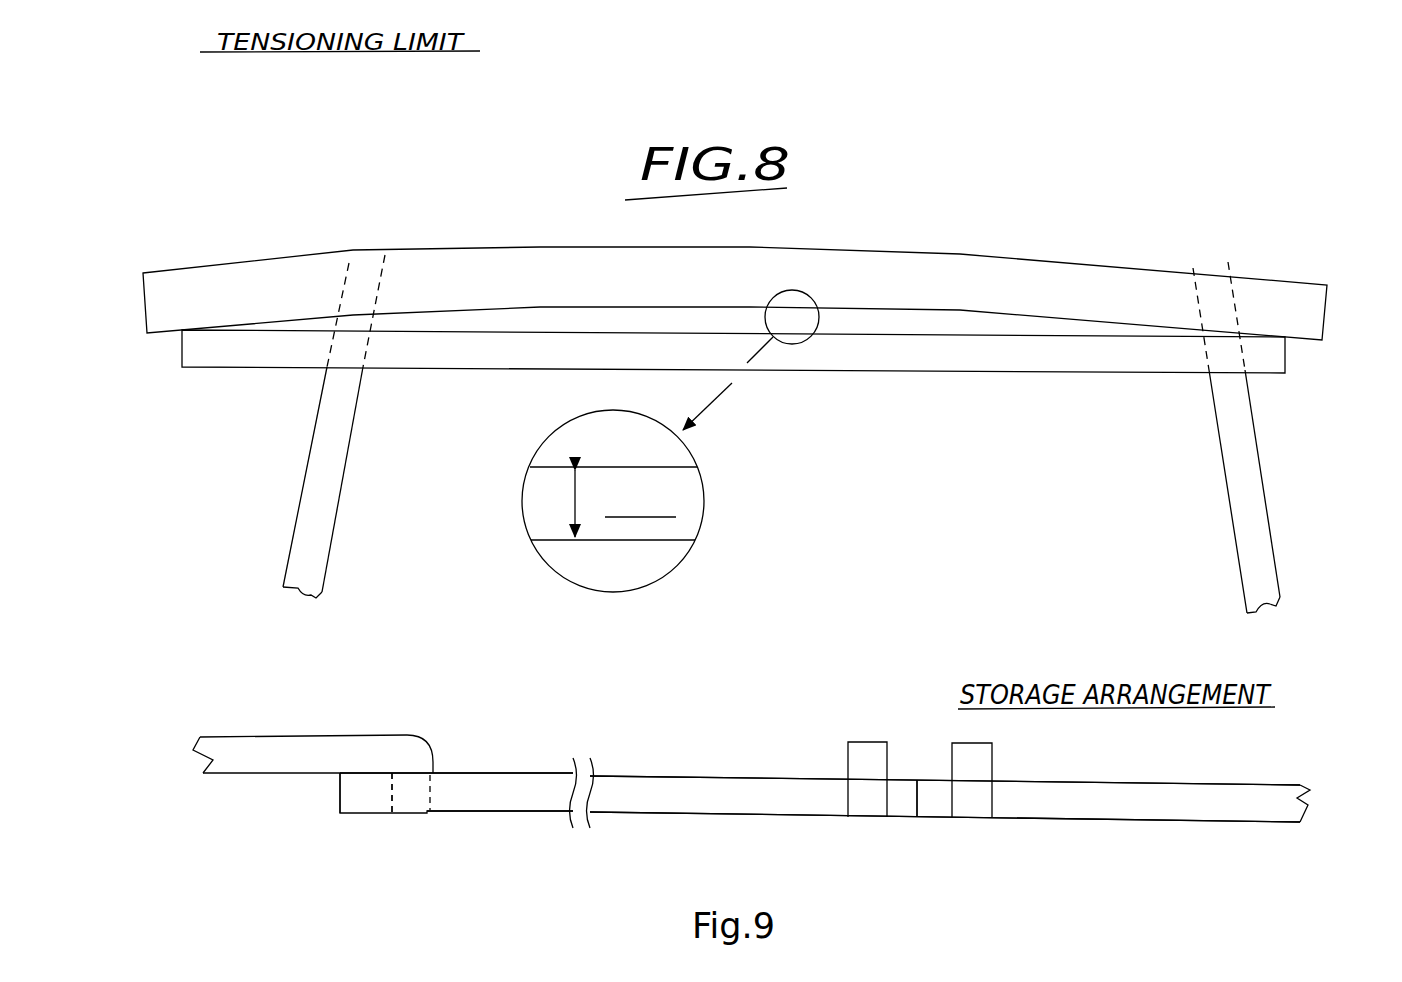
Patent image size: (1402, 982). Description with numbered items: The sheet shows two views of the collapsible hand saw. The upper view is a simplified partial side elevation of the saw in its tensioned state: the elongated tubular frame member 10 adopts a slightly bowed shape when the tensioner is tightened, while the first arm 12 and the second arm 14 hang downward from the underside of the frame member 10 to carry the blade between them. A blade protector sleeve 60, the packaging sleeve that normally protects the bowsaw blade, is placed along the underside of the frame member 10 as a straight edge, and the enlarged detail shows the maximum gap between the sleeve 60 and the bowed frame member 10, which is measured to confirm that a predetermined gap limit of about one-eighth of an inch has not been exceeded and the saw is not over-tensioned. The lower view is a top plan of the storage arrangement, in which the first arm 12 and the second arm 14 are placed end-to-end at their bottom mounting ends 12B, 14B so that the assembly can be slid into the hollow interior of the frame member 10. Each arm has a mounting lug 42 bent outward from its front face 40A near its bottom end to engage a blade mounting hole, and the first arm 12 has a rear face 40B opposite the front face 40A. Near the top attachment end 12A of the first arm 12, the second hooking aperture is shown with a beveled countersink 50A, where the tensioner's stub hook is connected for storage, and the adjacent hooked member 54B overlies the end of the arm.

In FIG. 8, the tubular frame member 10 is at (872, 274).
In FIG. 8, the first arm 12 is at (339, 444).
In FIG. 9, the first arm 12 is at (535, 774).
In FIG. 8, the second arm 14 is at (1233, 481).
In FIG. 9, the second arm 14 is at (1172, 798).
In FIG. 8, the blade protector sleeve 60 is at (920, 363).
In FIG. 9, the bracket 54B is at (312, 734).
In FIG. 9, the top attachment end 12A is at (337, 794).
In FIG. 9, the beveled countersink 50A is at (388, 806).
In FIG. 9, the front face 40A is at (487, 773).
In FIG. 9, the rear face 40B is at (527, 818).
In FIG. 9, the mounting lug 42 is at (863, 750).
In FIG. 9, the bottom mounting end 12B is at (914, 826).
In FIG. 9, the bottom mounting end 14B is at (914, 826).